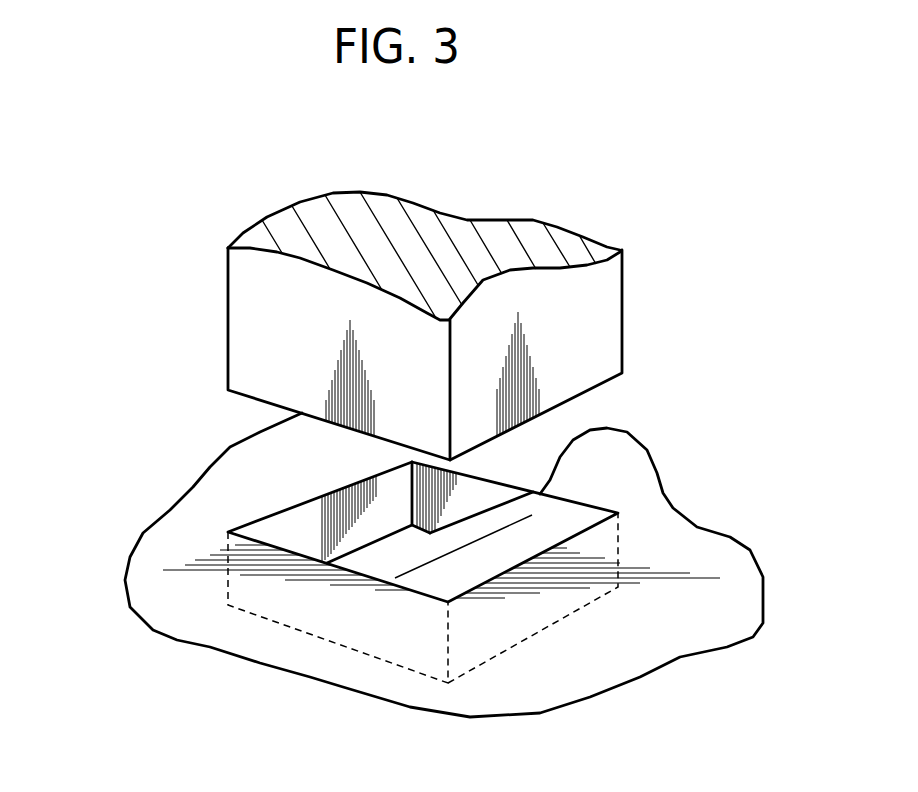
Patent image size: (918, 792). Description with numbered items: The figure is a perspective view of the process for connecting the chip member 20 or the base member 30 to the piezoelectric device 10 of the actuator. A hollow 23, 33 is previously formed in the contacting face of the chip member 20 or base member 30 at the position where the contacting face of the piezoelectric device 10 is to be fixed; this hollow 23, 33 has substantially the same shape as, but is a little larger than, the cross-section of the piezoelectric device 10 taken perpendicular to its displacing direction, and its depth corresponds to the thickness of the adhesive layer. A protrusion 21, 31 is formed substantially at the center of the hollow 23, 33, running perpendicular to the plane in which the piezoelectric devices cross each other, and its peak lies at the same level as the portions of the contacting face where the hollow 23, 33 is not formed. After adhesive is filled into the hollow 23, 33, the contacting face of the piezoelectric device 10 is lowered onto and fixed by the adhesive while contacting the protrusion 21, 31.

The first piezoelectric device 10 is at (603, 317).
The chip member 20 is at (466, 565).
The base member 30 is at (675, 535).
The protrusion 21 is at (617, 486).
The protrusion 31 is at (524, 505).
The hollow 23 is at (326, 542).
The hollow 33 is at (248, 523).